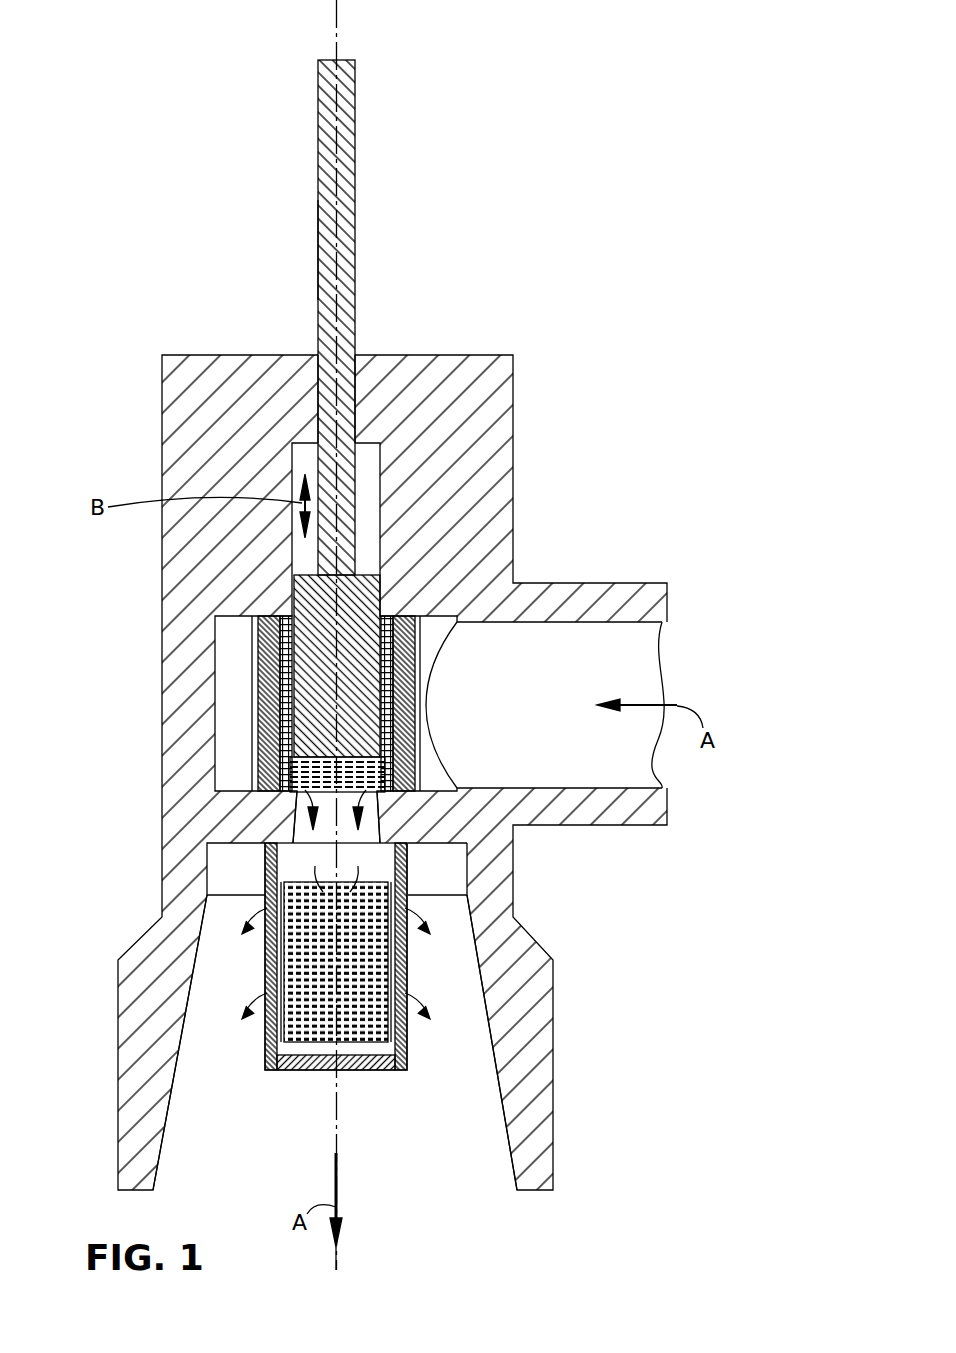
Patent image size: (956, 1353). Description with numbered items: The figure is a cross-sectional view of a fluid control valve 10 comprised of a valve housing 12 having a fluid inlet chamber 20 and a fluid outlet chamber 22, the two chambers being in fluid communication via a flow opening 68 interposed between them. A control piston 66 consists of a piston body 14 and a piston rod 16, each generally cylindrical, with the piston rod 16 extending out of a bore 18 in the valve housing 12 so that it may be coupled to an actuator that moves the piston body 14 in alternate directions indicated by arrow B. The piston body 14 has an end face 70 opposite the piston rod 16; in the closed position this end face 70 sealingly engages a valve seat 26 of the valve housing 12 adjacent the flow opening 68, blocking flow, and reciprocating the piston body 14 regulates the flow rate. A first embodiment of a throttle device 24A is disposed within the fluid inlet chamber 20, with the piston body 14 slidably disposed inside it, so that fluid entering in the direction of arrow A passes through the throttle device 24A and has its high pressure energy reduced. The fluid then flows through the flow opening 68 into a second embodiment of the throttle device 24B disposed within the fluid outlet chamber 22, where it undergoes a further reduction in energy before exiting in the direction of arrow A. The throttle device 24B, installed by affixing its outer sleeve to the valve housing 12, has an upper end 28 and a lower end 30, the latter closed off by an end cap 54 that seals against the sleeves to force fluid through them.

The fluid control valve 10 is at (150, 160).
The valve housing 12 is at (513, 404).
The piston body 14 is at (296, 596).
The piston rod 16 is at (356, 128).
The bore 18 is at (346, 358).
The fluid inlet chamber 20 is at (637, 656).
The fluid outlet chamber 22 is at (477, 1180).
The throttle device 24A is at (252, 702).
The throttle device 24B is at (266, 992).
The valve seat 26 is at (283, 800).
The upper end 28 is at (408, 872).
The lower end 30 is at (408, 1053).
The end cap 54 is at (368, 1071).
The control piston 66 is at (318, 240).
The flow opening 68 is at (363, 831).
The end face 70 is at (262, 778).